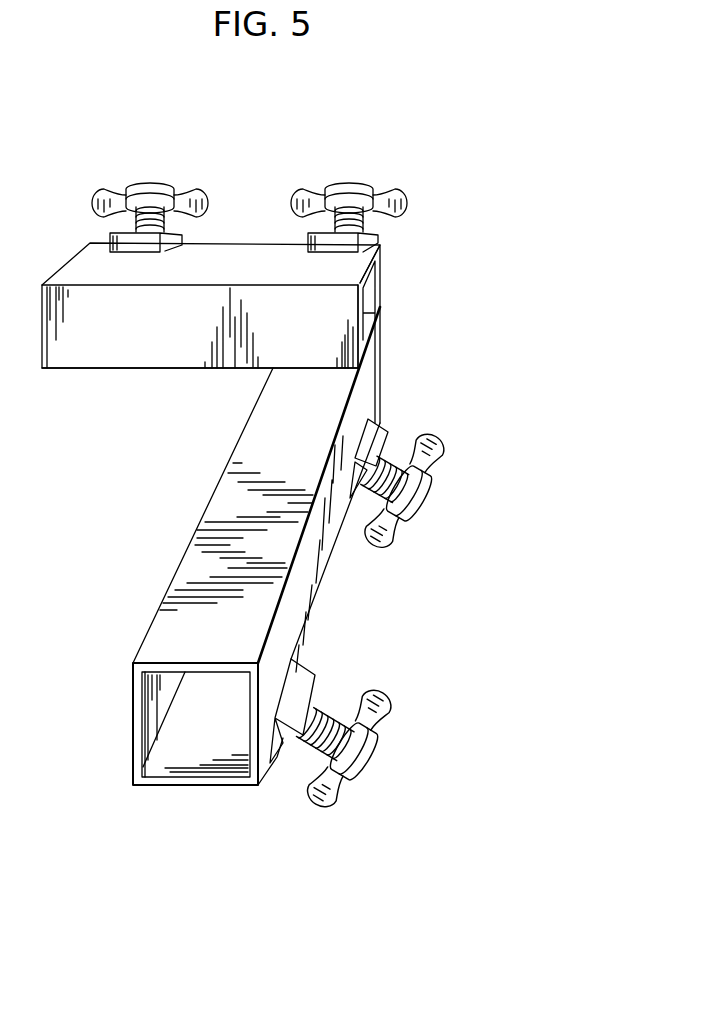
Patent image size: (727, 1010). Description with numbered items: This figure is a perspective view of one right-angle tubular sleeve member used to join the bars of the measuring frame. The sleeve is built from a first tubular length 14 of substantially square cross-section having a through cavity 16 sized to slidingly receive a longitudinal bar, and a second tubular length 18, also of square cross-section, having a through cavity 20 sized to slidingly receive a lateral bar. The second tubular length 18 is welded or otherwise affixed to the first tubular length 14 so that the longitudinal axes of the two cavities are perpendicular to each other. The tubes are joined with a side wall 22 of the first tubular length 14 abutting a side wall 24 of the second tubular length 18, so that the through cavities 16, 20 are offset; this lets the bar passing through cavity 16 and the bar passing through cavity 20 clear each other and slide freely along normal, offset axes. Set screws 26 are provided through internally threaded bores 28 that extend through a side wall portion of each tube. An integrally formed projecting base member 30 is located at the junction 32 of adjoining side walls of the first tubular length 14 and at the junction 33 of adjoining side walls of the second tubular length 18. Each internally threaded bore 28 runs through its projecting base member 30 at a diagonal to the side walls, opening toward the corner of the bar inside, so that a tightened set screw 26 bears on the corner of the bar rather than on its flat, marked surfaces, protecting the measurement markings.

The first tubular length 14 is at (188, 547).
The through cavity 16 is at (195, 753).
The second tubular length 18 is at (117, 352).
The through cavity 20 is at (368, 297).
The side wall 22 is at (225, 493).
The side wall 24 is at (292, 370).
The set screw 26 is at (158, 186).
The internally threaded bore 28 is at (383, 447).
The projecting base member 30 is at (110, 237).
The junction 32 is at (317, 613).
The junction 33 is at (240, 243).